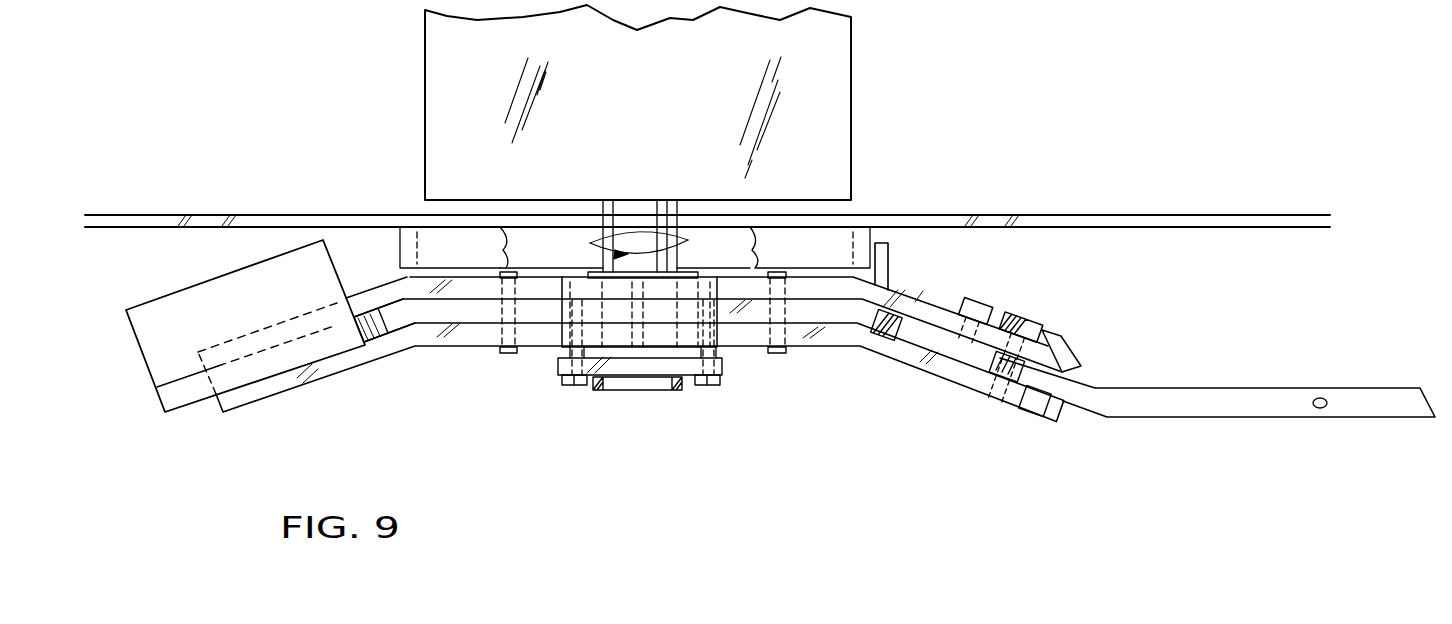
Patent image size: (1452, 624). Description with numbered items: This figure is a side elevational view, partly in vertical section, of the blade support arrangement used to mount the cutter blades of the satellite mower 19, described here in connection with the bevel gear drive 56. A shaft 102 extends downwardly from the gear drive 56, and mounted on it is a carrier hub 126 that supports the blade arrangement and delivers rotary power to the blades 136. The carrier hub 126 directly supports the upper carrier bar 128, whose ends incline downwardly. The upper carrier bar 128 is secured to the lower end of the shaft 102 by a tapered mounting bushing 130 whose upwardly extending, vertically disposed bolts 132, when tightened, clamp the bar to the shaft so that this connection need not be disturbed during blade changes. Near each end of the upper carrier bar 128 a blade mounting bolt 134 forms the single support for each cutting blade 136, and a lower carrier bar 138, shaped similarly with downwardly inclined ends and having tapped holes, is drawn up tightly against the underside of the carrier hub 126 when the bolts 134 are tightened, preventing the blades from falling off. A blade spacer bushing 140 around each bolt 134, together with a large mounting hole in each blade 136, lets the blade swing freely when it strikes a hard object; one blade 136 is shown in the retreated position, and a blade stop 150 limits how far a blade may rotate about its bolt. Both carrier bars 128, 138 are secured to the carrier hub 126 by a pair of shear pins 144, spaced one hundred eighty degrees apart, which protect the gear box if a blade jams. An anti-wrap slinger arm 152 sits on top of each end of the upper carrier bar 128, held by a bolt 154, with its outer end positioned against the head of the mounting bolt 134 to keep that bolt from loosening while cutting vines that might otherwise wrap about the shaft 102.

The satellite mower 19 is at (276, 214).
The bevel gear drive 56 is at (835, 68).
The shaft 102 is at (593, 222).
The carrier hub 126 is at (792, 308).
The upper carrier bar 128 is at (857, 282).
The tapered mounting bushing 130 is at (687, 367).
The bolts 132 is at (572, 386).
The blade mounting bolt 134 is at (1040, 330).
The cutting blade 136 is at (1218, 392).
The lower carrier bar 138 is at (277, 383).
The blade spacer bushing 140 is at (1037, 373).
The shear pins 144 is at (508, 352).
The blade stop 150 is at (380, 324).
The anti-wrap slinger arm 152 is at (898, 283).
The bolts 154 is at (978, 297).